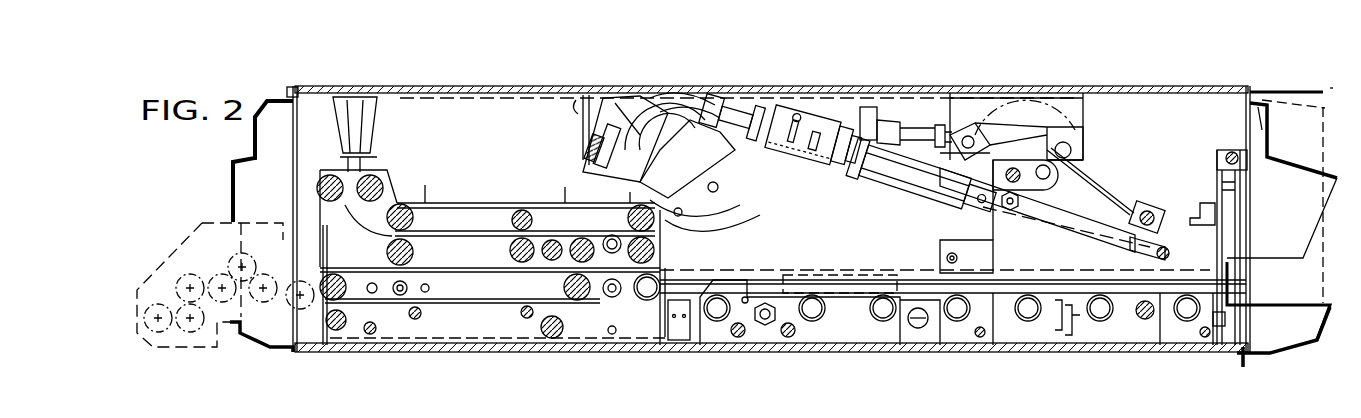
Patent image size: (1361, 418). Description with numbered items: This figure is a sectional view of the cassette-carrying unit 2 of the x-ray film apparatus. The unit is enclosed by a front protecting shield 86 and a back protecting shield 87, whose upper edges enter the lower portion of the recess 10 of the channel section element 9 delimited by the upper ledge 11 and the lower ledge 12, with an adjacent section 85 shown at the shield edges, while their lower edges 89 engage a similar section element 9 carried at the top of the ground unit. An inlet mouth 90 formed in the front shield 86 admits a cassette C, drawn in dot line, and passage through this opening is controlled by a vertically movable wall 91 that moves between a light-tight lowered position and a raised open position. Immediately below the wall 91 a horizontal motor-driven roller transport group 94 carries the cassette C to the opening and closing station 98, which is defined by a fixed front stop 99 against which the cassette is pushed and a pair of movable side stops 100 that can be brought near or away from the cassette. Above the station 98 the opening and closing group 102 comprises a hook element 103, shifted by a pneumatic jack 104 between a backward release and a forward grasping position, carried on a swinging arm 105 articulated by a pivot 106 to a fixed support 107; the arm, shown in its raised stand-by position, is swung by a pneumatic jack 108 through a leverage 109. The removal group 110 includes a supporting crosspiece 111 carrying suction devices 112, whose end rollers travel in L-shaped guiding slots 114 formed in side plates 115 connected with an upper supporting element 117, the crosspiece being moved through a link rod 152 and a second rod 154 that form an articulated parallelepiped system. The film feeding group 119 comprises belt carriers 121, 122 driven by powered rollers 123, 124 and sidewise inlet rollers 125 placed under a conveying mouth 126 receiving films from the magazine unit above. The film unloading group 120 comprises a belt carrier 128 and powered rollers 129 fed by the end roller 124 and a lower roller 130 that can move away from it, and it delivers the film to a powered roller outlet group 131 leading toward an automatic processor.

The cassette-carrying unit 2 is at (992, 86).
The channel section element 9 is at (298, 352).
The recess 10 is at (1321, 88).
The upper ledge 11 is at (1252, 90).
The lower ledge 12 is at (1268, 118).
The flange 85 is at (272, 99).
The front protecting shield 86 is at (1293, 205).
The back protecting shield 87 is at (252, 122).
The lower edges of protecting shields 89 is at (268, 348).
The inlet mouth 90 is at (1238, 292).
The vertically movable wall 91 is at (1230, 245).
The roller transport group 94 is at (990, 315).
The opening and closing station 98 is at (765, 258).
The fixed front stop 99 is at (678, 342).
The movable side stops 100 is at (760, 320).
The opening and closing group 102 is at (880, 108).
The hook element 103 is at (755, 135).
The pneumatic jack 104 is at (880, 176).
The swinging arm 105 is at (1060, 228).
The pivot 106 is at (1160, 215).
The fixed support 107 is at (1180, 240).
The pneumatic jack 108 is at (880, 116).
The leverage 109 is at (1052, 140).
The removal group 110 is at (572, 150).
The supporting crosspiece 111 is at (628, 112).
The suction devices 112 is at (676, 104).
The L-shaped guiding slots 114 is at (705, 100).
The side plates 115 is at (722, 160).
The upper supporting element 117 is at (585, 98).
The film feeding group 119 is at (432, 190).
The film unloading group 120 is at (458, 330).
The belt carrier 121 is at (450, 190).
The belt carrier 122 is at (470, 265).
The powered roller 123 is at (405, 206).
The powered roller 124 is at (520, 250).
The inlet rollers 125 is at (330, 175).
The conveying mouth 126 is at (365, 116).
The belt carrier 128 is at (410, 330).
The powered rollers 129 is at (345, 330).
The inlet roller 130 is at (640, 340).
The powered roller outlet group 131 is at (188, 263).
The link rod 152 is at (735, 214).
The second rod 154 is at (725, 198).
The cassette C is at (812, 282).